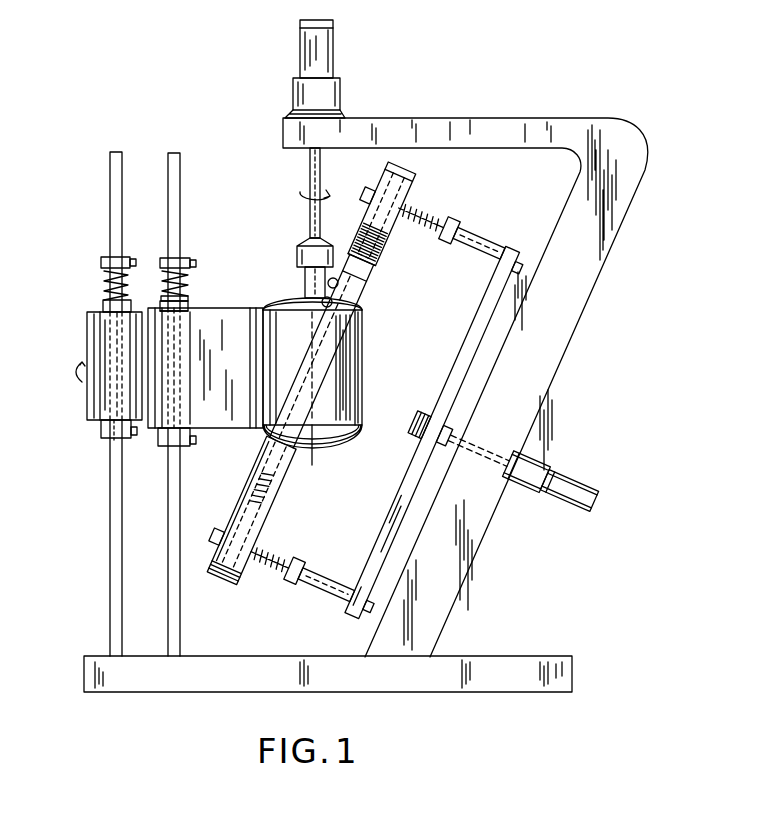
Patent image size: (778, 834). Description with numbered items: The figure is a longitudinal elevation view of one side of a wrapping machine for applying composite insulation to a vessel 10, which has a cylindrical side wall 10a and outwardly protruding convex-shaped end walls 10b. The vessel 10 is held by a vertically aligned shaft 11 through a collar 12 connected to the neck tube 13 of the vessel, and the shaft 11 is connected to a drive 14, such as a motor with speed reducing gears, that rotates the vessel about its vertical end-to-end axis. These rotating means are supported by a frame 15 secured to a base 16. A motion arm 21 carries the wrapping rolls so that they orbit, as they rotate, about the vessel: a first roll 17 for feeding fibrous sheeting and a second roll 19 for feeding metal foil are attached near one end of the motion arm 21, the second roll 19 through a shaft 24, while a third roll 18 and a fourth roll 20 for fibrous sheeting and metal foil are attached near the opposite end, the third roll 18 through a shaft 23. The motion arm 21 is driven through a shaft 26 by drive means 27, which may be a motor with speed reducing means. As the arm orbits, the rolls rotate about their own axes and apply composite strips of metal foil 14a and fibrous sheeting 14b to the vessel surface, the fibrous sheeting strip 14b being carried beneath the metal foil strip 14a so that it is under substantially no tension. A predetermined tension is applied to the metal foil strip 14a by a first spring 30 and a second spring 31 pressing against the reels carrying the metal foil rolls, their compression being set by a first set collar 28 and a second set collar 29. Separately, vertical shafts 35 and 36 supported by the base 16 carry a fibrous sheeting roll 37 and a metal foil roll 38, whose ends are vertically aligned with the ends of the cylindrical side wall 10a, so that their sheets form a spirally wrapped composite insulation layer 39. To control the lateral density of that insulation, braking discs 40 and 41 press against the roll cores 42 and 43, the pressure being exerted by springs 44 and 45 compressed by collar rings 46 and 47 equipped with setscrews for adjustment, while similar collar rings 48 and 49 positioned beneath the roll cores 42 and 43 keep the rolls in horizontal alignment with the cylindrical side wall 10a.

The vessel 10 is at (270, 298).
The cylindrical side wall 10a is at (352, 364).
The convex-shaped end walls 10b is at (276, 310).
The shaft 11 is at (310, 186).
The collar 12 is at (298, 250).
The neck tube 13 is at (305, 276).
The drive 14 is at (310, 42).
The metal foil strip 14a is at (370, 262).
The fibrous sheeting strip 14b is at (350, 250).
The frame 15 is at (634, 164).
The base 16 is at (275, 660).
The first roll 17 is at (212, 570).
The third roll 18 is at (418, 182).
The second roll 19 is at (250, 543).
The fourth roll 20 is at (388, 194).
The motion arm 21 is at (468, 351).
The shaft 23 is at (475, 238).
The shaft 24 is at (320, 593).
The shaft 26 is at (452, 428).
The drive means 27 is at (570, 478).
The first set collar 28 is at (302, 569).
The second set collar 29 is at (447, 246).
The first spring 30 is at (278, 582).
The second spring 31 is at (412, 216).
The vertical shaft 35 is at (174, 178).
The vertical shaft 36 is at (110, 158).
The fibrous sheeting roll 37 is at (160, 312).
The metal foil roll 38 is at (90, 322).
The composite insulation layer 39 is at (230, 415).
The braking disc 40 is at (186, 300).
The braking disc 41 is at (106, 308).
The roll core 42 is at (190, 305).
The roll core 43 is at (104, 320).
The spring 44 is at (166, 281).
The spring 45 is at (108, 280).
The collar ring 46 is at (178, 258).
The collar ring 47 is at (118, 258).
The collar ring 48 is at (170, 446).
The collar ring 49 is at (104, 434).